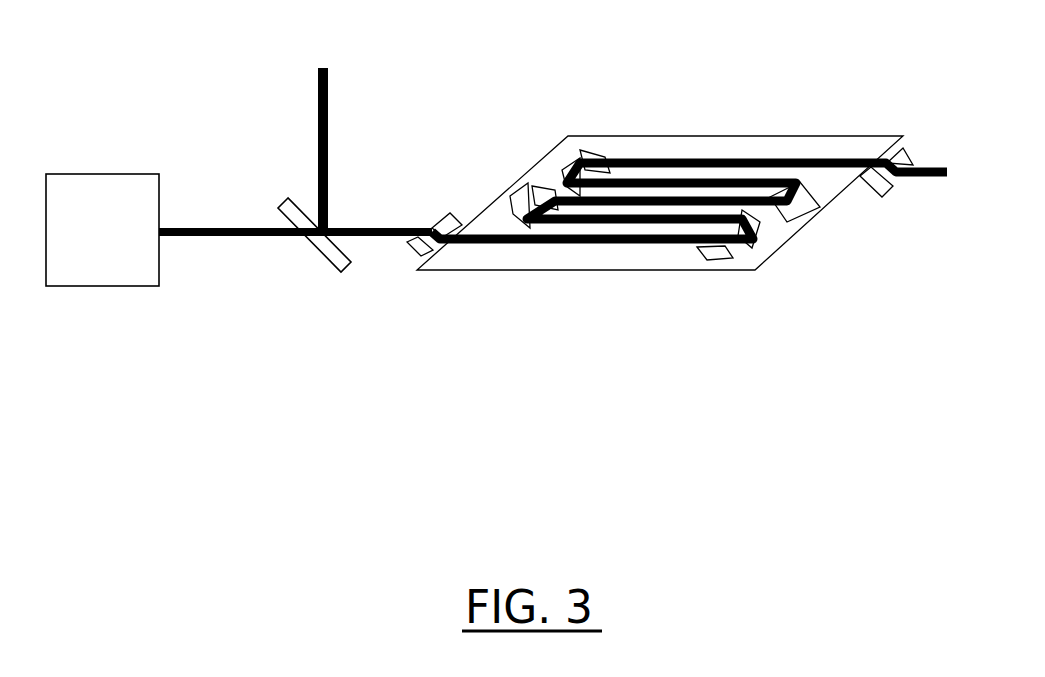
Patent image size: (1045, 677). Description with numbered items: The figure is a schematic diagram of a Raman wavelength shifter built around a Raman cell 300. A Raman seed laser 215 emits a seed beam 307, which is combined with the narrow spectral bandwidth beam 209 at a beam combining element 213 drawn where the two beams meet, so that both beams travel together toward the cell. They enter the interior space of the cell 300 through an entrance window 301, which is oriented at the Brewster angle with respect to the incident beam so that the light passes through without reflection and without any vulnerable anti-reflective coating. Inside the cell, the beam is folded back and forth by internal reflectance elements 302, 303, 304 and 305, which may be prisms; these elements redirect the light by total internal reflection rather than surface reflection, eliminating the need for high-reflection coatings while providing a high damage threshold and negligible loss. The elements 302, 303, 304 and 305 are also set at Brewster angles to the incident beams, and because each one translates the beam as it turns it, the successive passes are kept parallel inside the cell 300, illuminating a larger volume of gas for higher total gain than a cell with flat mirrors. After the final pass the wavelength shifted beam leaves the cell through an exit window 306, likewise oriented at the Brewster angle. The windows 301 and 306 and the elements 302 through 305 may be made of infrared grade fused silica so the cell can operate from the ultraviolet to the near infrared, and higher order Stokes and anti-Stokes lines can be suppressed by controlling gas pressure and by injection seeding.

The narrow spectral bandwidth beam 209 is at (310, 92).
The beam splitter 213 is at (340, 280).
The Raman seed laser 215 is at (107, 172).
The Raman cell 300 is at (697, 93).
The entrance window 301 is at (436, 213).
The internal reflectance element 302 is at (710, 257).
The internal reflectance element 303 is at (518, 190).
The internal reflectance element 304 is at (810, 213).
The internal reflectance element 305 is at (603, 145).
The exit window 306 is at (885, 188).
The seed beam 307 is at (230, 240).